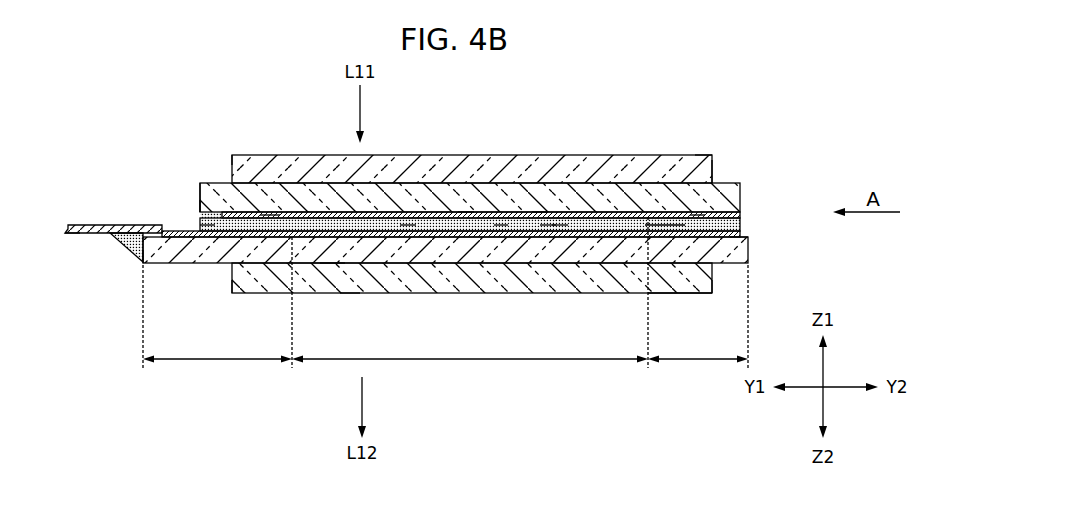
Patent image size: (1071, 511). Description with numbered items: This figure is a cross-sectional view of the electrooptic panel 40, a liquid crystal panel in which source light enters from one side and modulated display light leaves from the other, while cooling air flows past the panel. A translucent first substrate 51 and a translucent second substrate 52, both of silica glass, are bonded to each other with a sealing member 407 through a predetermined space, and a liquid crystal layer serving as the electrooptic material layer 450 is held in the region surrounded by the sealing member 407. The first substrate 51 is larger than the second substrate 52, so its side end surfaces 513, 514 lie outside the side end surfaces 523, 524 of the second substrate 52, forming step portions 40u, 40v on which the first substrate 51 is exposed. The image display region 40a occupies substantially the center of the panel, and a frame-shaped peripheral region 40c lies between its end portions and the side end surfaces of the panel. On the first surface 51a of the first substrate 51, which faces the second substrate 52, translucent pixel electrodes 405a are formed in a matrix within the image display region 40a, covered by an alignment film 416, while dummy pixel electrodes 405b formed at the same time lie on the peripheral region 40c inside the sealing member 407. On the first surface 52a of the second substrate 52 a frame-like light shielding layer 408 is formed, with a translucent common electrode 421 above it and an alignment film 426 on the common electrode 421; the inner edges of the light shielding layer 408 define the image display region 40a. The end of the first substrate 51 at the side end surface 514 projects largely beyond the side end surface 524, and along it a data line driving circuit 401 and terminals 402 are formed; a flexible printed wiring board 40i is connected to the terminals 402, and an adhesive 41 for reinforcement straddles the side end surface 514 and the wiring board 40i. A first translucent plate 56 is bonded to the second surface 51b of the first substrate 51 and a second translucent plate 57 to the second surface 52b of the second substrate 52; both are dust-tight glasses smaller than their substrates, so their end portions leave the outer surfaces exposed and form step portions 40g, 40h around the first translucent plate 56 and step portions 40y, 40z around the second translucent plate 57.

The electrooptic panel 40 is at (768, 98).
The image display region 40a is at (470, 372).
The peripheral region 40c is at (445, 372).
The step portion 40g is at (712, 294).
The step portion 40h is at (232, 295).
The flexible printed wiring board 40i is at (80, 238).
The step portion 40u is at (743, 236).
The step portion 40v is at (197, 203).
The step portion 40y is at (714, 172).
The step portion 40z is at (232, 158).
The adhesive for reinforcement 41 is at (130, 242).
The first substrate 51 is at (713, 278).
The first surface of the first substrate 51a is at (333, 265).
The second surface of the first substrate 51b is at (348, 295).
The second substrate 52 is at (735, 188).
The first surface of the second substrate 52a is at (466, 212).
The second surface of the second substrate 52b is at (540, 211).
The first translucent plate 56 is at (663, 294).
The second translucent plate 57 is at (703, 156).
The data line driving circuit 401 is at (200, 240).
The terminals 402 is at (148, 230).
The pixel electrodes 405a is at (385, 234).
The dummy pixel electrodes 405b is at (678, 214).
The sealing member 407 is at (225, 238).
The light shielding layer 408 is at (270, 214).
The alignment film 416 is at (501, 224).
The common electrode 421 is at (408, 224).
The alignment film 426 is at (560, 224).
The electrooptic material layer 450 is at (548, 228).
The side end surface of the first substrate 513 is at (750, 250).
The side end surface of the first substrate 514 is at (134, 262).
The side end surface of the second substrate 523 is at (742, 200).
The side end surface of the second substrate 524 is at (195, 200).